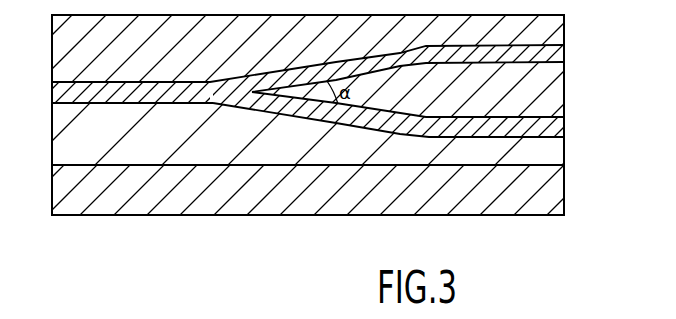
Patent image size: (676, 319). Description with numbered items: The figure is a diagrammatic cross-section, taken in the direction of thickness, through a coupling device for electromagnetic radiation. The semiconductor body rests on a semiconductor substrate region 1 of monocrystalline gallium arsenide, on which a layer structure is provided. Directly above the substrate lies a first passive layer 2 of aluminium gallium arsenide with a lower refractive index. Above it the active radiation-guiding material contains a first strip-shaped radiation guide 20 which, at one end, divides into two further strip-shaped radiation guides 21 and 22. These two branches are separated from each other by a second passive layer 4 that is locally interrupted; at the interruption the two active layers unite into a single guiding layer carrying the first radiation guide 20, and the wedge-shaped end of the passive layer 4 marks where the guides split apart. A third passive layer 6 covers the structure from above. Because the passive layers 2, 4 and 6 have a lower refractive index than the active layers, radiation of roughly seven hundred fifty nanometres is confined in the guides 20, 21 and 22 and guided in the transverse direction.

The semiconductor substrate region 1 is at (545, 187).
The first passive layer 2 is at (548, 149).
The second locally interrupted passive layer 4 is at (538, 88).
The third passive layer 6 is at (545, 27).
The first strip-shaped radiation guide 20 is at (77, 90).
The further strip-shaped radiation guide 21 is at (550, 127).
The further strip-shaped radiation guide 22 is at (552, 53).